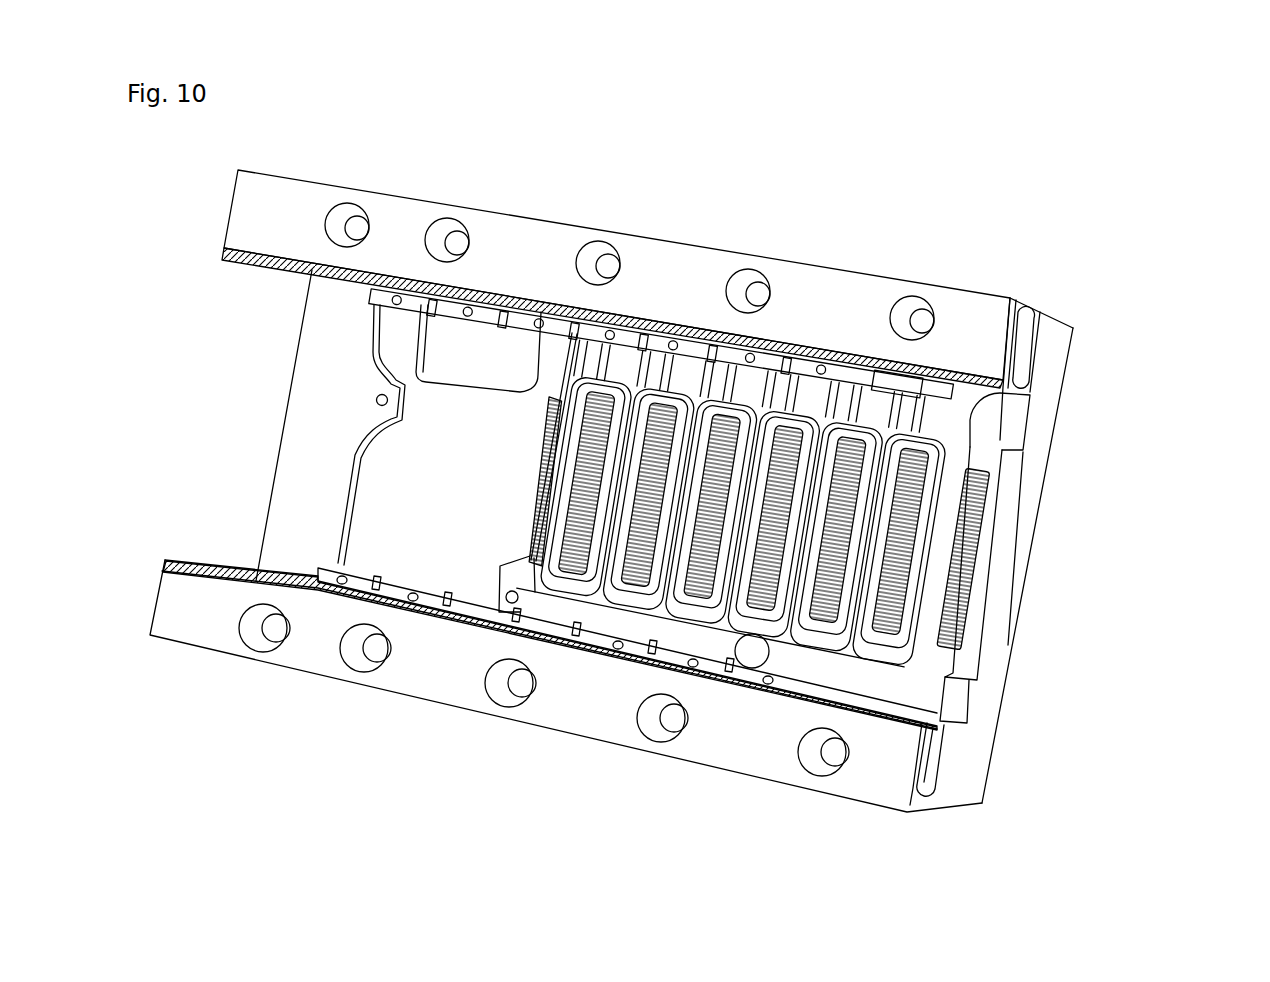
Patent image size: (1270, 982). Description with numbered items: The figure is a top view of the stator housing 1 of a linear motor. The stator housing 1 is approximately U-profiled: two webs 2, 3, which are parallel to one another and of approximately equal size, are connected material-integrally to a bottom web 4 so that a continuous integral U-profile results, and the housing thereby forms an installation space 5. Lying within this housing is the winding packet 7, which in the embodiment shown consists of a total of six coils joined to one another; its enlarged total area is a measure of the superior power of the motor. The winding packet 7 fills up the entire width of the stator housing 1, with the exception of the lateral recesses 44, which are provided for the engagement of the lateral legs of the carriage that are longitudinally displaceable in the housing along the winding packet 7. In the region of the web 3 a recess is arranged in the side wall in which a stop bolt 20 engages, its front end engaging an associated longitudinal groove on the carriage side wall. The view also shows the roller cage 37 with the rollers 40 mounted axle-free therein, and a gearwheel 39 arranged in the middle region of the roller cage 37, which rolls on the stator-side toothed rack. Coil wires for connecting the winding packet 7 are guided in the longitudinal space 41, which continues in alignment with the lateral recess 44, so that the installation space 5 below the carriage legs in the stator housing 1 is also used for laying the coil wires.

The stator housing 1 is at (727, 219).
The web 2 is at (735, 733).
The web 3 is at (865, 315).
The bottom web 4 is at (1012, 568).
The installation space 5 is at (410, 423).
The winding packet 7 is at (728, 407).
The stop bolt 20 is at (897, 380).
The roller cage 37 is at (620, 320).
The gearwheel 39 is at (570, 307).
The rollers 40 is at (432, 615).
The longitudinal space 41 is at (948, 393).
The lateral recess 44 is at (1023, 417).